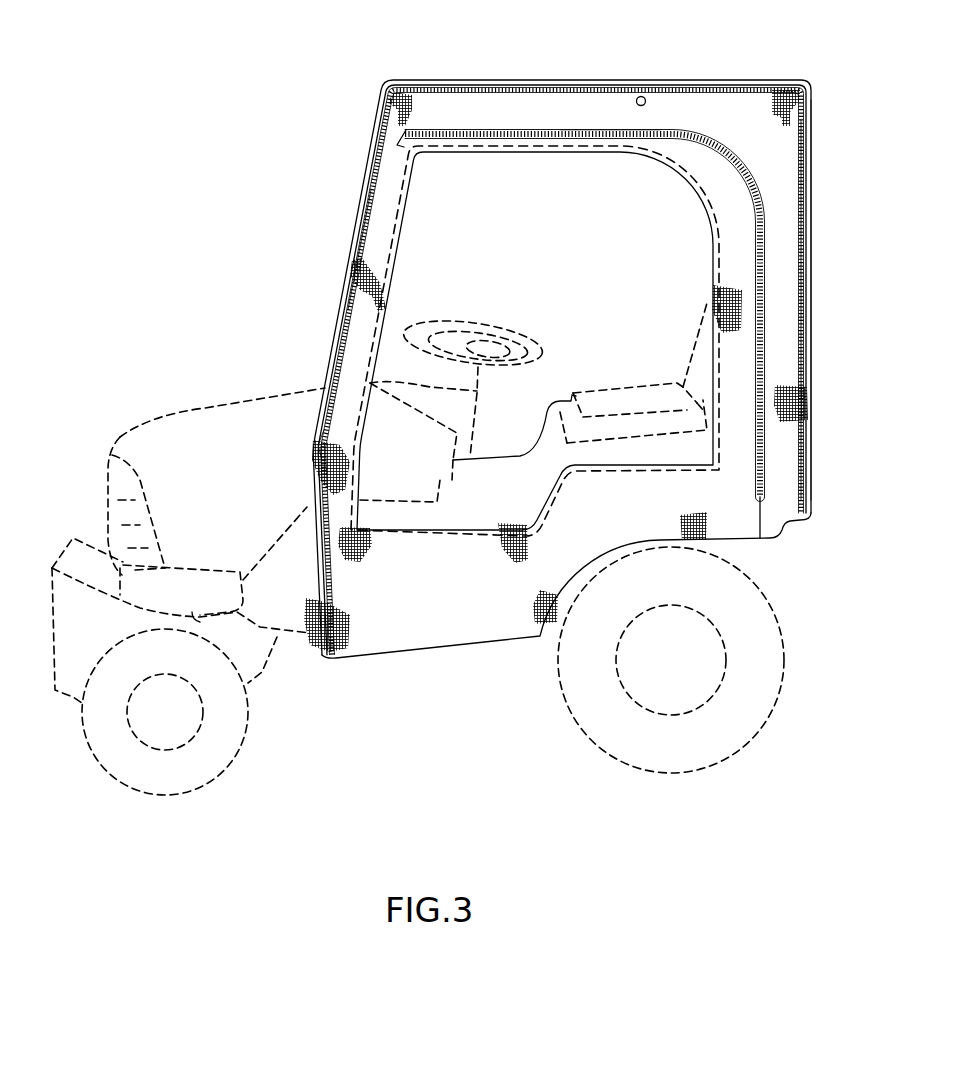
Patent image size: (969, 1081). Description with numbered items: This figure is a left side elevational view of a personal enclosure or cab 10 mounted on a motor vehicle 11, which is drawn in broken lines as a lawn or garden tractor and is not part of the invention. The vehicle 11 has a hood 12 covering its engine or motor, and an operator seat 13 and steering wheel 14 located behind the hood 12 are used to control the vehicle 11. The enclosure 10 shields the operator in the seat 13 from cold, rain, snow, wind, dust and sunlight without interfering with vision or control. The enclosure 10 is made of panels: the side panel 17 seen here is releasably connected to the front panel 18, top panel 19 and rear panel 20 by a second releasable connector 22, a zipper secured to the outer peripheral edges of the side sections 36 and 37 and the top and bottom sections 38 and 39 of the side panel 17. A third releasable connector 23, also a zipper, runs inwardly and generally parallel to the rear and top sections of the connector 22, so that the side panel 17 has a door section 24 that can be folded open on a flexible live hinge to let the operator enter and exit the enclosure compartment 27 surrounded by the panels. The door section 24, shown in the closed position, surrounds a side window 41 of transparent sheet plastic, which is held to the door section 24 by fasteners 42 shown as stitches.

The personal enclosure 10 is at (457, 68).
The motor vehicle 11 is at (122, 437).
The hood 12 is at (207, 406).
The operator seat 13 is at (641, 387).
The steering wheel 14 is at (480, 325).
The second side panel 17 is at (752, 125).
The front panel 18 is at (351, 212).
The top panel 19 is at (557, 77).
The rear panel 20 is at (816, 195).
The second releasable connector 22 is at (641, 96).
The third releasable connector 23 is at (686, 130).
The door section 24 is at (393, 637).
The enclosure compartment 27 is at (590, 221).
The side section 36 is at (380, 234).
The side section 37 is at (789, 284).
The top section 38 is at (512, 115).
The bottom section 39 is at (738, 520).
The side window 41 is at (402, 301).
The fasteners 42 is at (722, 386).